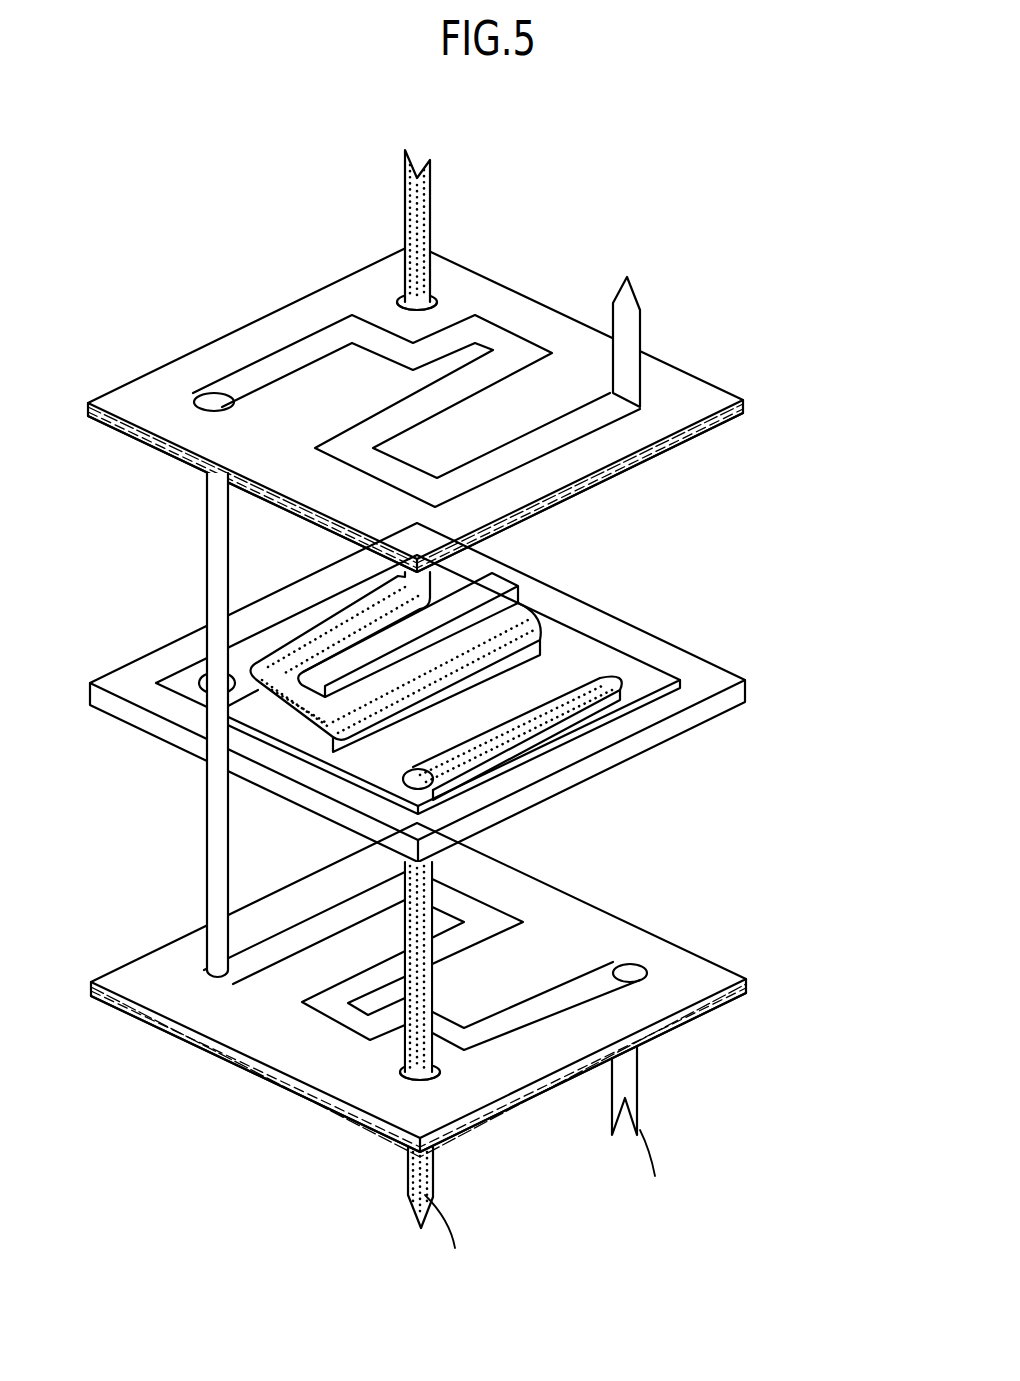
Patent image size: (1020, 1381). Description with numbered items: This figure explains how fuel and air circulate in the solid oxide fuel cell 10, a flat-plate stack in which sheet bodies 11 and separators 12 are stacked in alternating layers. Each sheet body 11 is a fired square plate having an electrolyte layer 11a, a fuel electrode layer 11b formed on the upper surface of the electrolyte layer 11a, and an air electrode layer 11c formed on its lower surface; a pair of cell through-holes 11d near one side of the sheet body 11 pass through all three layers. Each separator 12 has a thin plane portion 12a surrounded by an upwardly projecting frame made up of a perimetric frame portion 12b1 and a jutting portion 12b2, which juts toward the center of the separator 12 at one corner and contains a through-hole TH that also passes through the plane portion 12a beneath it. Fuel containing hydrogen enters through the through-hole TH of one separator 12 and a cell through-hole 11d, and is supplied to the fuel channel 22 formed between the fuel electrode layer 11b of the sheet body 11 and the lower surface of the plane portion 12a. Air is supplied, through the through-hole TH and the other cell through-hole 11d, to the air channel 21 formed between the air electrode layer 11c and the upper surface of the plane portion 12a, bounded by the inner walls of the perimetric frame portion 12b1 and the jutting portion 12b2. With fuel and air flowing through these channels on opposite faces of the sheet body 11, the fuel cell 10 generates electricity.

The solid oxide fuel cell 10 is at (467, 715).
The sheet body 11 is at (706, 392).
The electrolyte layer 11a is at (745, 402).
The fuel electrode layer 11b is at (745, 395).
The air electrode layer 11c is at (745, 410).
The cell through-hole 11d is at (402, 292).
The separator 12 is at (682, 537).
The plane portion 12a is at (562, 645).
The perimetric frame portion 12b1 is at (712, 680).
The jutting portion 12b2 is at (248, 703).
The air channel 21 is at (523, 640).
The fuel channel 22 is at (528, 318).
The through-hole TH is at (210, 688).